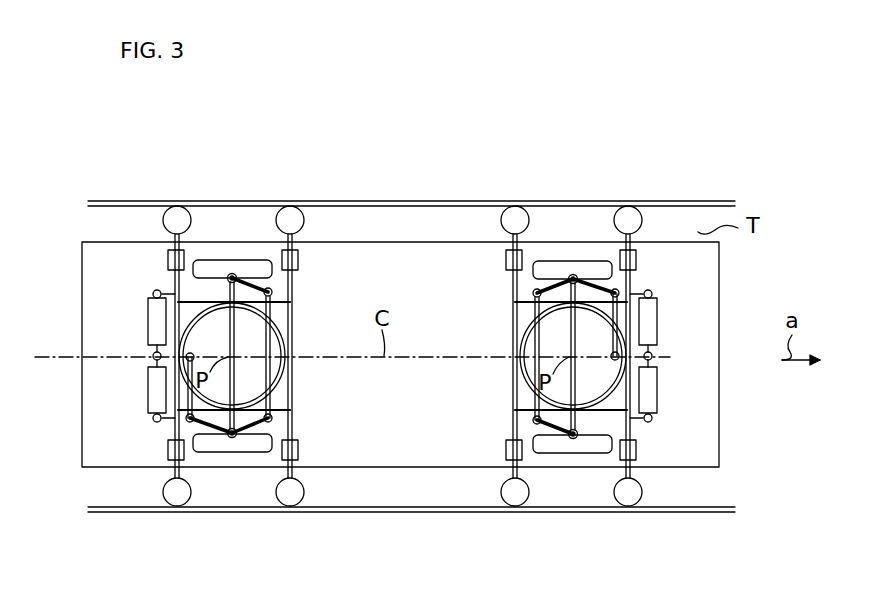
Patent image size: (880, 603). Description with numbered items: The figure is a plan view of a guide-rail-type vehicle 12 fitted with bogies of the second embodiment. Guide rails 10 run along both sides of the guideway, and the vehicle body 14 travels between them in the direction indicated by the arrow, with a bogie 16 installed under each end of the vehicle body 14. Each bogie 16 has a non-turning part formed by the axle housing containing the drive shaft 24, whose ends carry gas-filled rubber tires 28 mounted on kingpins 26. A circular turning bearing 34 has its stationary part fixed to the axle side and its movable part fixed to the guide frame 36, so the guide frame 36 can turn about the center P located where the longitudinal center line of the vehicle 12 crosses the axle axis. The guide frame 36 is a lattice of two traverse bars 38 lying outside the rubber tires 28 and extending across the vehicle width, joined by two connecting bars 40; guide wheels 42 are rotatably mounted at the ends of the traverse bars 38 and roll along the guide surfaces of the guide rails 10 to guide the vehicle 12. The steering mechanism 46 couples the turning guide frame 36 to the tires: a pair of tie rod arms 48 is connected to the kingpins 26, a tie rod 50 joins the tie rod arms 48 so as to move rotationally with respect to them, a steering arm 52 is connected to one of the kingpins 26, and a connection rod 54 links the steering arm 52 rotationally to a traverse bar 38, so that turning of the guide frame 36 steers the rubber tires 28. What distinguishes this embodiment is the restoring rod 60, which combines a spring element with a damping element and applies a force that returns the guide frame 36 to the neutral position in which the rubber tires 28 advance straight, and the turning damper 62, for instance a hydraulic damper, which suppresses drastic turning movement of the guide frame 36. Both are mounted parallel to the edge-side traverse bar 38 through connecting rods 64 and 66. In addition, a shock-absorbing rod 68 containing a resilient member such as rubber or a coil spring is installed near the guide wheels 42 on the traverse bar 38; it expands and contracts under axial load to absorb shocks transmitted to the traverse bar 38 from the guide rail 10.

The guide rail 10 is at (340, 202).
The vehicle 12 is at (420, 232).
The vehicle body 14 is at (372, 242).
The bogie 16 is at (568, 228).
The drive shaft 24 is at (226, 340).
The kingpin 26 is at (228, 276).
The rubber tire 28 is at (222, 446).
The circular turning bearing 34 is at (182, 323).
The guide frame 36 is at (508, 392).
The traverse bar 38 is at (168, 268).
The connecting bar 40 is at (194, 297).
The guide wheel 42 is at (182, 206).
The steering mechanism 46 is at (530, 363).
The tie rod arm 48 is at (268, 428).
The tie rod 50 is at (292, 312).
The steering arm 52 is at (167, 447).
The connection rod 54 is at (147, 402).
The restoring rod 60 is at (148, 378).
The turning damper 62 is at (147, 304).
The connecting rod 64 is at (165, 422).
The connecting rod 66 is at (150, 296).
The shock-absorbing rod 68 is at (186, 422).